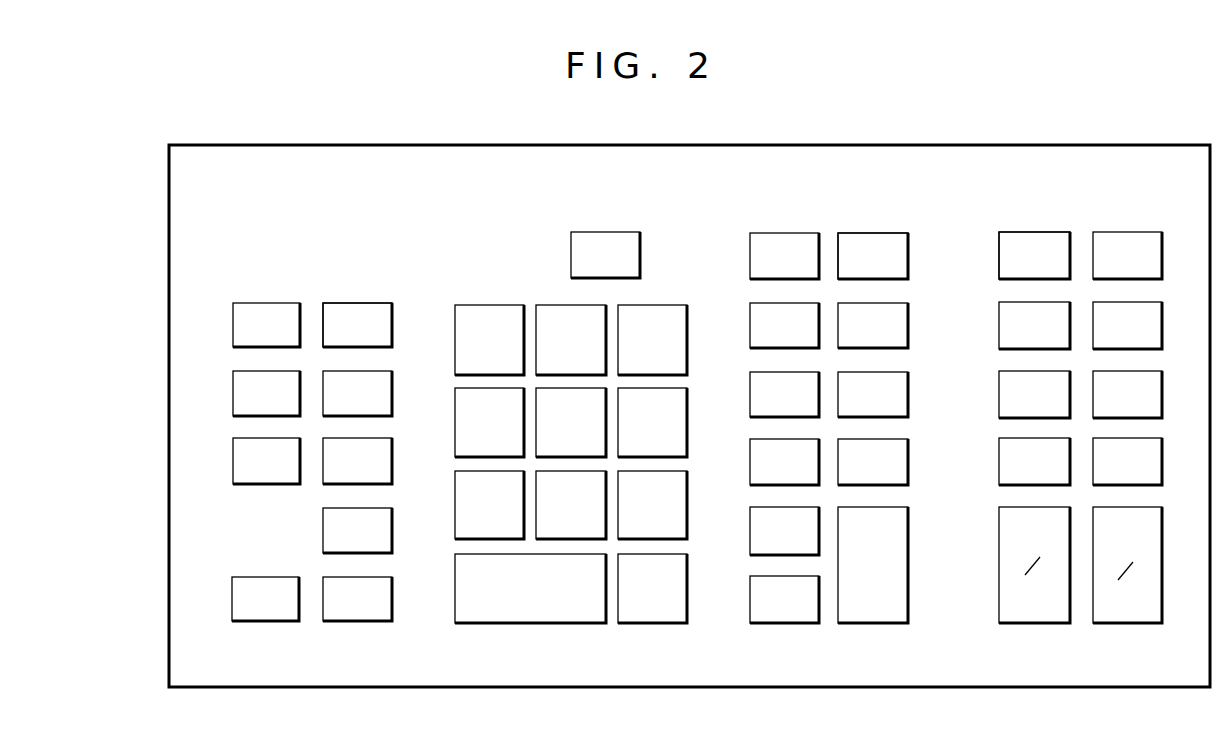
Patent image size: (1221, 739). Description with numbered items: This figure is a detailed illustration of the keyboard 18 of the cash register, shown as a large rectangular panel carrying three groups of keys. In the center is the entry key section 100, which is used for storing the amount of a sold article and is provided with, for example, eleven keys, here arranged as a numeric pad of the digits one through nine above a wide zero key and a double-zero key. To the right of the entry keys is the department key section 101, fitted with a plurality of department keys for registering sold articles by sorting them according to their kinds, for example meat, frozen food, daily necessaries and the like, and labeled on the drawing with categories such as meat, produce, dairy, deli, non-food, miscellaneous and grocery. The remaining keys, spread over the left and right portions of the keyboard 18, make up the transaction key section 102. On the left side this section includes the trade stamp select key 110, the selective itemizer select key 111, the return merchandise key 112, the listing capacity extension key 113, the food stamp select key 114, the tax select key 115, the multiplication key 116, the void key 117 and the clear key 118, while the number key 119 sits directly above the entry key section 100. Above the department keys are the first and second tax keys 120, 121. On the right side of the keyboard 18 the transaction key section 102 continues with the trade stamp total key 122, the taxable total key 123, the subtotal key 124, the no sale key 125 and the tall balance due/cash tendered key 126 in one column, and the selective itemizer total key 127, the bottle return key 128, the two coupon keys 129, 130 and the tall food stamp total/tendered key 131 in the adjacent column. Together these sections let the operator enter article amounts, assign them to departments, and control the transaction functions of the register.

The keyboard 18 is at (1058, 146).
The entry key section 100 is at (671, 302).
The department key section 101 is at (738, 271).
The transaction key section 102 is at (318, 298).
The trade stamp select key 110 is at (235, 337).
The selective itemizer select key 111 is at (235, 405).
The return merchandise key 112 is at (234, 462).
The listing capacity extension key 113 is at (235, 607).
The food stamp select key 114 is at (382, 338).
The tax select key 115 is at (382, 406).
The multiplication key 116 is at (380, 472).
The void key 117 is at (380, 540).
The clear key 118 is at (380, 608).
The number key 119 is at (571, 250).
The first tax key 120 is at (790, 232).
The second tax key 121 is at (876, 232).
The trade stamp total key 122 is at (999, 270).
The taxable total key 123 is at (999, 340).
The subtotal key 124 is at (999, 408).
The no sale key 125 is at (999, 476).
The balance due/cash tendered key 126 is at (999, 570).
The selective itemizer total key 127 is at (1163, 256).
The bottle return key 128 is at (1163, 325).
The coupon key 129 is at (1163, 393).
The coupon key 130 is at (1163, 461).
The food stamp total/tendered key 131 is at (1163, 553).